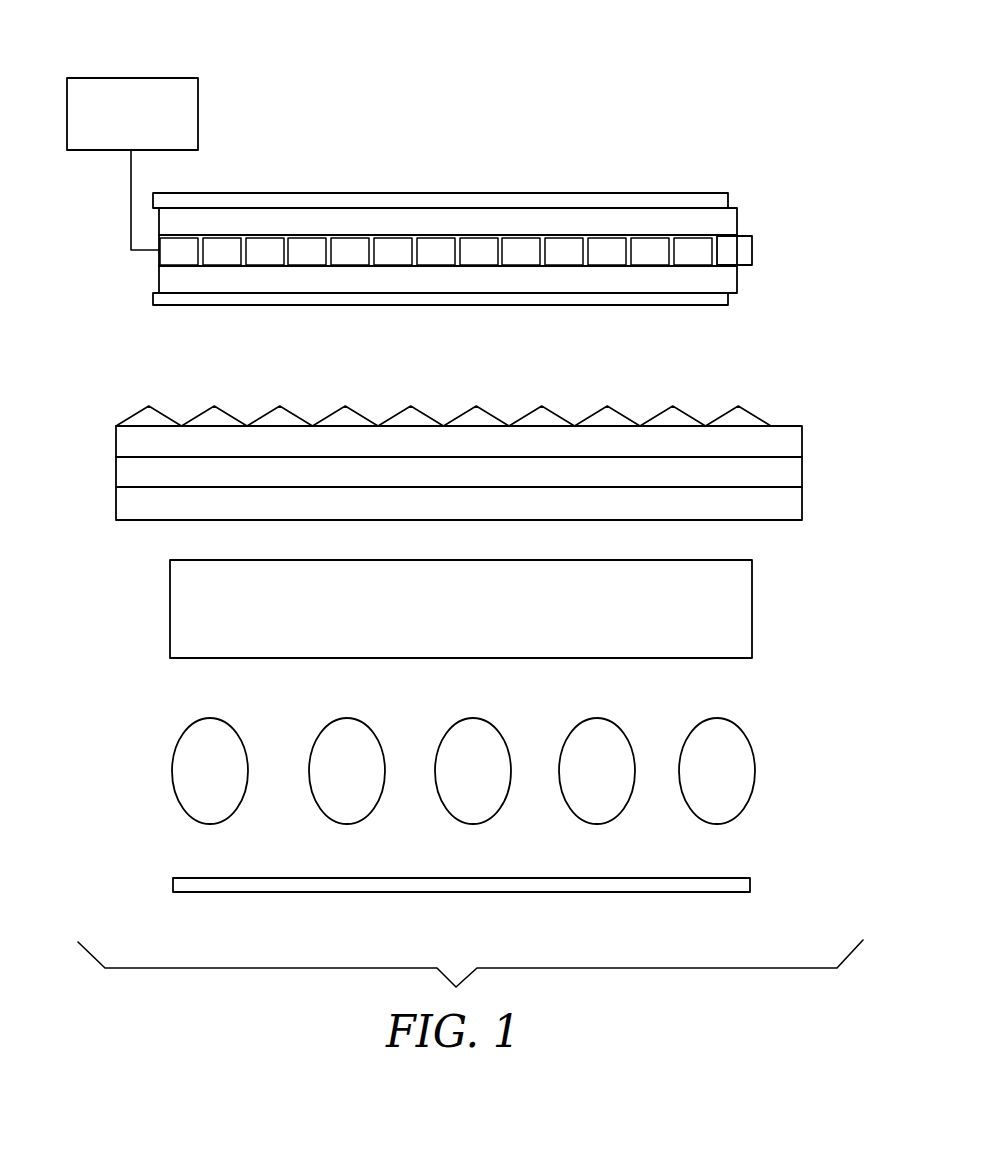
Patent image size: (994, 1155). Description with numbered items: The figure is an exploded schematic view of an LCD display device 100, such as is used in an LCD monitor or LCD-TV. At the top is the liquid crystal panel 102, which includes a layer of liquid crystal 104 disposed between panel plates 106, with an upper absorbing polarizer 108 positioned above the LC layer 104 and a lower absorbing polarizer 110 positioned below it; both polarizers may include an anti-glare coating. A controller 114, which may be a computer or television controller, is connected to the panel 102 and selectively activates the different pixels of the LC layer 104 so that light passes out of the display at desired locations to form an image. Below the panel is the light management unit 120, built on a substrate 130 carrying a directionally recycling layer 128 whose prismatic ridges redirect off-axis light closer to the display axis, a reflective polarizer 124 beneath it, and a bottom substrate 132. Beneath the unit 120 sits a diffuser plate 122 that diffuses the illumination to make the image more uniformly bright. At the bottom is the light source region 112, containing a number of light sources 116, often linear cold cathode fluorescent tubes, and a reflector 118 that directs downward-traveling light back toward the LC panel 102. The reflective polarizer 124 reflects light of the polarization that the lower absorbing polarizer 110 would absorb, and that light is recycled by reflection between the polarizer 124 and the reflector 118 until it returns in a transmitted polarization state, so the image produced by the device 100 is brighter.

The display device 100 is at (588, 99).
The liquid crystal panel 102 is at (115, 212).
The liquid crystal layer 104 is at (752, 247).
The panel plates 106 is at (737, 221).
The upper absorbing polarizer 108 is at (728, 204).
The lower absorbing polarizer 110 is at (728, 297).
The light source region 112 is at (155, 722).
The controller 114 is at (132, 78).
The light sources 116 is at (755, 767).
The reflector 118 is at (750, 885).
The light management unit 120 is at (100, 405).
The diffuser plate 122 is at (752, 603).
The reflective polarizer 124 is at (802, 472).
The directionally recycling layer 128 is at (752, 417).
The substrate 130 is at (802, 438).
The bottom substrate 132 is at (802, 505).